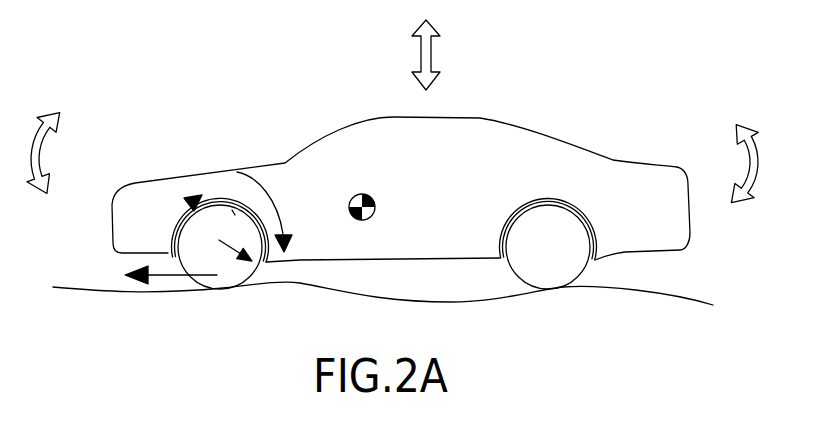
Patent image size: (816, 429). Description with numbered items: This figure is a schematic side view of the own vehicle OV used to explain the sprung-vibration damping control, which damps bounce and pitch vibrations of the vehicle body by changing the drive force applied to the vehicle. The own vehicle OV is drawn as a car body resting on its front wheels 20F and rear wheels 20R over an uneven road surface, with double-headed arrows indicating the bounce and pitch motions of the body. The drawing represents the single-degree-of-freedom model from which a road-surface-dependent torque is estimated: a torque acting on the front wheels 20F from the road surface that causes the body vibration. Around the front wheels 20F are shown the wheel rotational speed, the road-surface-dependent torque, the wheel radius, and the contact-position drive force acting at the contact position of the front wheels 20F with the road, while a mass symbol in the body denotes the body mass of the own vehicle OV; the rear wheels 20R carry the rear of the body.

The own vehicle OV is at (498, 127).
The front wheels 20F is at (238, 203).
The rear wheels 20R is at (568, 227).